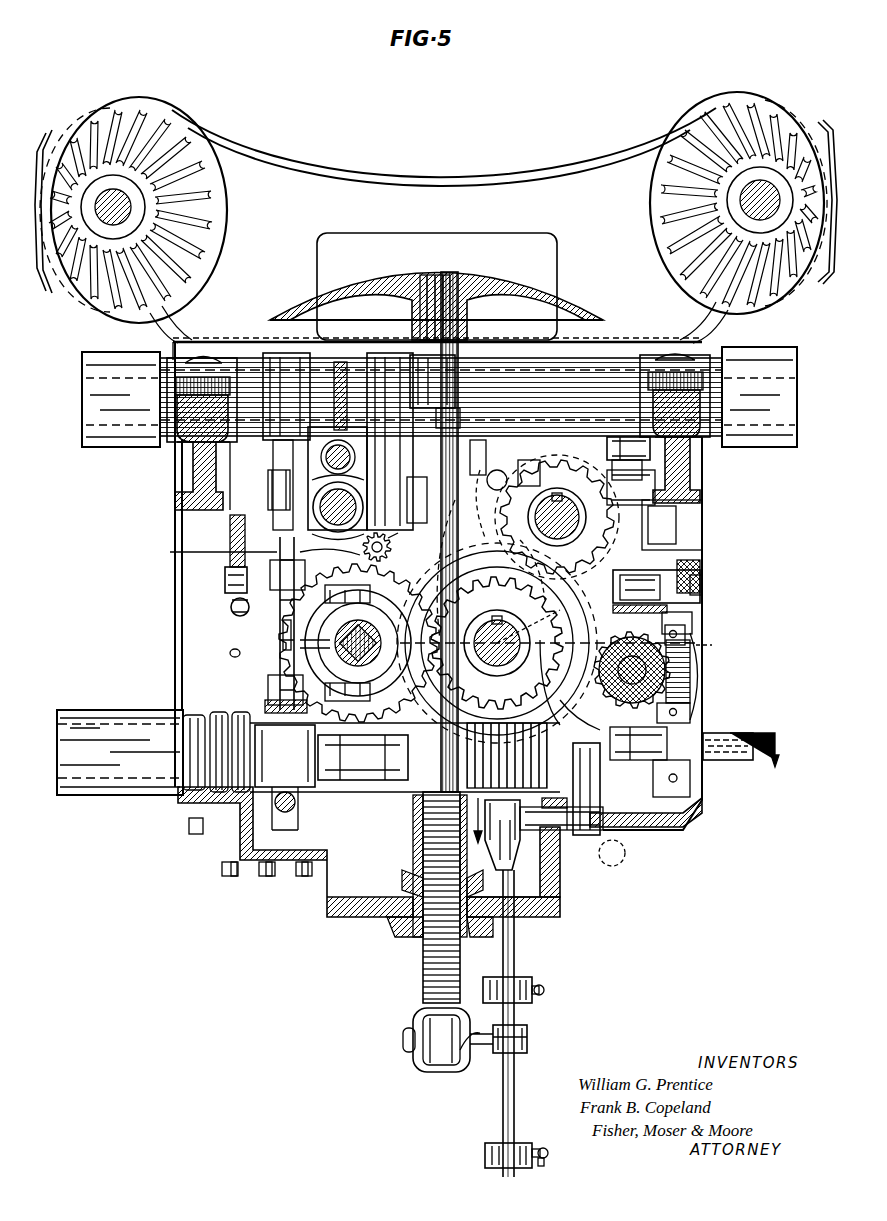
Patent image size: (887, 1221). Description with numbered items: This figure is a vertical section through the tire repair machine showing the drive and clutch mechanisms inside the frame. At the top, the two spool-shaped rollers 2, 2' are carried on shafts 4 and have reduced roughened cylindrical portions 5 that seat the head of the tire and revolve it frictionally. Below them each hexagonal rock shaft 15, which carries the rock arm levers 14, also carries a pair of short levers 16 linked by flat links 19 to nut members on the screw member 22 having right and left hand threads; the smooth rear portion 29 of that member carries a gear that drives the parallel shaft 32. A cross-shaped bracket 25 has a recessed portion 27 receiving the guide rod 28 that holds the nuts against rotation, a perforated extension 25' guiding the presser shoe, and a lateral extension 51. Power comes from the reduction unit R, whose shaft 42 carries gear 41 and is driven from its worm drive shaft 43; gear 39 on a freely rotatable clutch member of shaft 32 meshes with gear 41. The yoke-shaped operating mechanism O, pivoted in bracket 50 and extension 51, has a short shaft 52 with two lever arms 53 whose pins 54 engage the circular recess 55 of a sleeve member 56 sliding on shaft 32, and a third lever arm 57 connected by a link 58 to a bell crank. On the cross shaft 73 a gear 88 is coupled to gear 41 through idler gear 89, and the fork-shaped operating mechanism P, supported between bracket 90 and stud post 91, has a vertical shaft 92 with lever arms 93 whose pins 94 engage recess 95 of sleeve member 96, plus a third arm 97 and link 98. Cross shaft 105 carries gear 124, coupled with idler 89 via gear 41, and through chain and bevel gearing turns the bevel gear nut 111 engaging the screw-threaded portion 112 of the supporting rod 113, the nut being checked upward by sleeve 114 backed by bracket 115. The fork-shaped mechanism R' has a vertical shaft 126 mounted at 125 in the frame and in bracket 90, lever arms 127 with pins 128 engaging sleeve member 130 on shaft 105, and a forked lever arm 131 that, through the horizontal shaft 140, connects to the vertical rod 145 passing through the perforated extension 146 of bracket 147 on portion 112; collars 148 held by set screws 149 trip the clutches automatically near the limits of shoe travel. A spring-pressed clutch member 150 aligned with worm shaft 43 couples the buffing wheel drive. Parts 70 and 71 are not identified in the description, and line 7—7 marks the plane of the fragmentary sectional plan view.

The spool-shaped roller 2 is at (138, 210).
The spool-shaped roller 2' is at (732, 203).
The roller shaft 4 is at (118, 226).
The reduced roughened cylindrical portion 5 is at (490, 272).
The section line 7 is at (626, 799).
The lever 14 is at (126, 450).
The rock shaft 15 is at (565, 376).
The short lever 16 is at (275, 438).
The link 19 is at (270, 488).
The screw member 22 is at (318, 507).
The cross-shaped bracket 25 is at (393, 377).
The perforated extension 25' is at (471, 389).
The recessed portion 27 is at (297, 478).
The guide rod 28 is at (325, 462).
The smooth portion 29 is at (736, 645).
The shaft 32 is at (283, 638).
The gear 39 is at (389, 547).
The gear 41 is at (486, 520).
The shaft of reduction unit 42 is at (550, 643).
The worm drive shaft 43 is at (612, 853).
The bracket 50 is at (265, 705).
The lateral extension 51 is at (213, 552).
The short shaft 52 is at (280, 655).
The lever arm 53 is at (268, 600).
The pin 54 is at (358, 643).
The circular recess 55 is at (330, 634).
The sleeve member 56 is at (335, 655).
The third lever arm 57 is at (230, 606).
The link 58 is at (224, 580).
The lever 70 is at (330, 557).
The pin 71 is at (402, 539).
The cross shaft 73 is at (520, 563).
The gear 88 is at (497, 470).
The idler gear 89 is at (570, 685).
The bracket 90 is at (702, 588).
The stud post 91 is at (690, 462).
The short vertical shaft 92 is at (672, 525).
The lever arm 93 is at (598, 458).
The pin 94 is at (552, 460).
The circular recess 95 is at (486, 505).
The sleeve member 96 is at (527, 464).
The third lever arm 97 is at (702, 573).
The link 98 is at (705, 595).
The cross shaft 105 is at (560, 685).
The bevel gear nut 111 is at (402, 882).
The screw-threaded portion 112 is at (425, 972).
The supporting rod 113 is at (465, 457).
The sleeve 114 is at (424, 833).
The bracket 115 is at (403, 792).
The gear 124 is at (672, 690).
The mounting 125 is at (690, 818).
The vertical shaft 126 is at (712, 762).
The lever arm 127 is at (694, 615).
The pin 128 is at (688, 637).
The sleeve member 130 is at (695, 657).
The forked lever arm 131 is at (700, 787).
The short horizontal shaft 140 is at (570, 838).
The vertical rod 145 is at (516, 947).
The perforated extension 146 is at (528, 1040).
The bracket 147 is at (445, 1060).
The collar 148 is at (535, 972).
The set screw 149 is at (545, 990).
The clutch member 150 is at (210, 712).
The operating mechanism P is at (702, 497).
The reduction unit R is at (456, 566).
The operating mechanism R' is at (711, 676).
The operating mechanism O is at (233, 653).